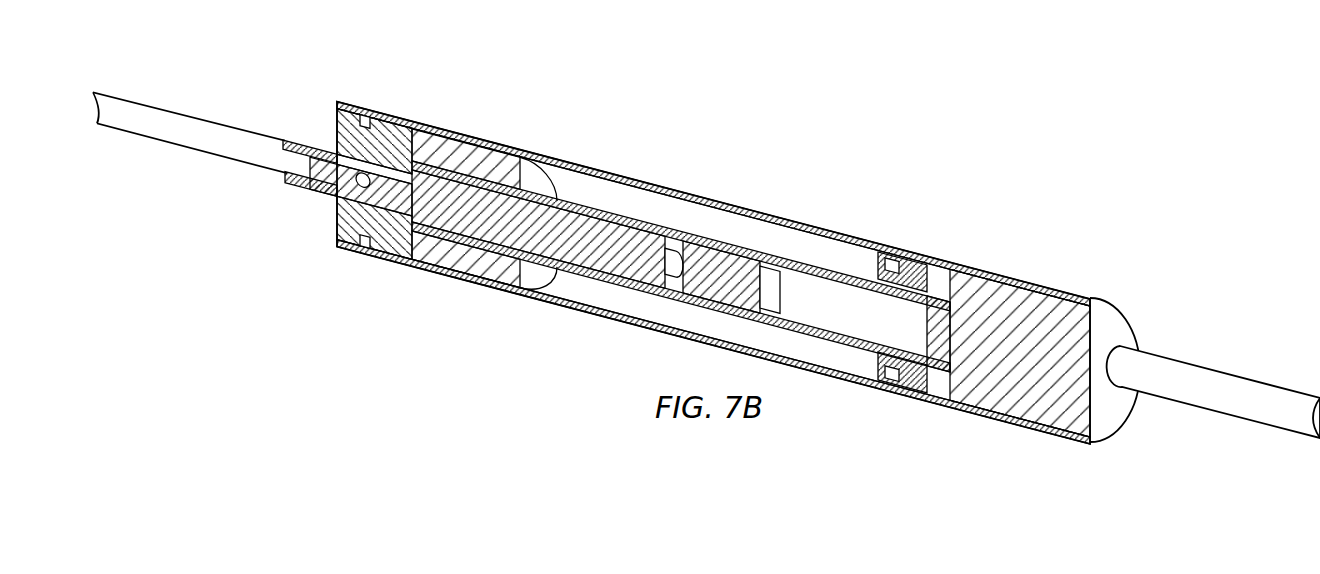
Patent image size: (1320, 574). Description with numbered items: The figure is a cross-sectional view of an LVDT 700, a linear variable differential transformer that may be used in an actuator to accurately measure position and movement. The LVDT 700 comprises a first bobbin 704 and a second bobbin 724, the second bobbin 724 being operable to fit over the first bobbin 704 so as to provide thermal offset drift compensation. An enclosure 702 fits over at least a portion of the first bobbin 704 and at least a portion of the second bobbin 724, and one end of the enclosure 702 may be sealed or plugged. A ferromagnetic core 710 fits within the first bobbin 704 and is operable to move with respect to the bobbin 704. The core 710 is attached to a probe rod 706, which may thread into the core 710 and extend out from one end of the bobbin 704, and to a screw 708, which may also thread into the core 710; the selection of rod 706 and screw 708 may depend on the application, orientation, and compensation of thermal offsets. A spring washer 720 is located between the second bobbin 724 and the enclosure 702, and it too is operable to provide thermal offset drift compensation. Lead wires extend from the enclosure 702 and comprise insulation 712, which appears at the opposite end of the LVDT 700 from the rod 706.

The LVDT 700 is at (719, 107).
The enclosure 702 is at (1013, 400).
The first bobbin 704 is at (400, 240).
The probe rod 706 is at (200, 138).
The screw 708 is at (705, 275).
The ferromagnetic core 710 is at (503, 222).
The insulation 712 is at (1196, 366).
The spring washer 720 is at (955, 280).
The second bobbin 724 is at (477, 165).